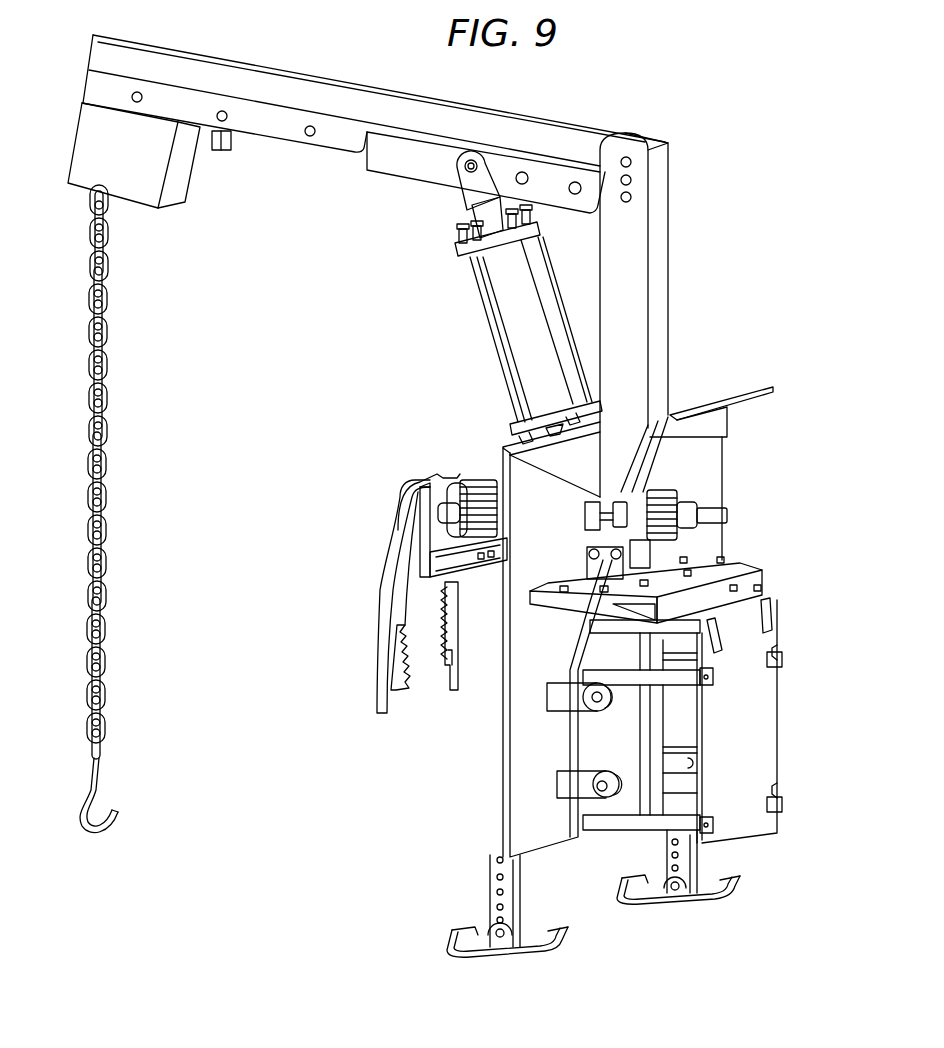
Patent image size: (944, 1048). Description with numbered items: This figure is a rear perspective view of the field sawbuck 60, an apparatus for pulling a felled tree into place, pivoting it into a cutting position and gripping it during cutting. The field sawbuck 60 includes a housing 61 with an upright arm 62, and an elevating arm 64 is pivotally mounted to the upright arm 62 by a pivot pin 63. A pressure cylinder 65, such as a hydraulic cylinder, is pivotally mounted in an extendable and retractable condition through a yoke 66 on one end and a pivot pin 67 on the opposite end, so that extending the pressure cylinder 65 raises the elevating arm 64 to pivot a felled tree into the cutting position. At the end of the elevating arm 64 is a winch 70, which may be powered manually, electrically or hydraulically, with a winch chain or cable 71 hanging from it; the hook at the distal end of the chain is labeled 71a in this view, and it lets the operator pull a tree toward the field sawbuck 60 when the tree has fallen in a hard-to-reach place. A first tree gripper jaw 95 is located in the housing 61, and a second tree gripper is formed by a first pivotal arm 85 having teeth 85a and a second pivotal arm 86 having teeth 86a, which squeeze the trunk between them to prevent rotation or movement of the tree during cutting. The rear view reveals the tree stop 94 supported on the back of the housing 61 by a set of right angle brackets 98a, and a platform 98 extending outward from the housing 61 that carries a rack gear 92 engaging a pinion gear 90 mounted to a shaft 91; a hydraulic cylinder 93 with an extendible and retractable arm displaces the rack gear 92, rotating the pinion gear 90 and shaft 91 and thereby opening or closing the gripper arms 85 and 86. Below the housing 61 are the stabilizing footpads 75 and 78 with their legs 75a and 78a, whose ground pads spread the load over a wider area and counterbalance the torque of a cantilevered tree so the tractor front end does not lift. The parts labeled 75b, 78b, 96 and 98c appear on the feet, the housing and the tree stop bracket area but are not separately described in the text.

The field sawbuck 60 is at (713, 181).
The housing 61 is at (710, 428).
The upright arm 62 is at (655, 315).
The pivot pin 63 is at (630, 158).
The elevating arm 64 is at (425, 118).
The pressure cylinder 65 is at (500, 312).
The yoke 66 is at (470, 190).
The pivot pin 67 is at (478, 165).
The winch 70 is at (150, 156).
The winch chain or cable 71 is at (110, 326).
The hook 71a is at (112, 812).
The stabilizing footpad 75 is at (702, 906).
The leg 75a is at (695, 868).
The right foot pivot 75b is at (680, 897).
The stabilizing foot 78 is at (505, 947).
The leg 78a is at (520, 880).
The left foot skid 78b is at (472, 950).
The first pivotal arm 85 is at (400, 560).
The teeth 85a is at (403, 655).
The second pivotal arm 86 is at (445, 593).
The teeth 86a is at (436, 640).
The pinion gear 90 is at (672, 490).
The shaft 91 is at (715, 512).
The rack gear 92 is at (705, 545).
The hydraulic cylinder 93 is at (632, 562).
The tree stop 94 is at (752, 708).
The first tree gripper jaw 95 is at (566, 699).
The lower pin 96 is at (577, 785).
The platform 98 is at (722, 590).
The right angle brackets 98a is at (723, 643).
The clip 98c is at (774, 812).